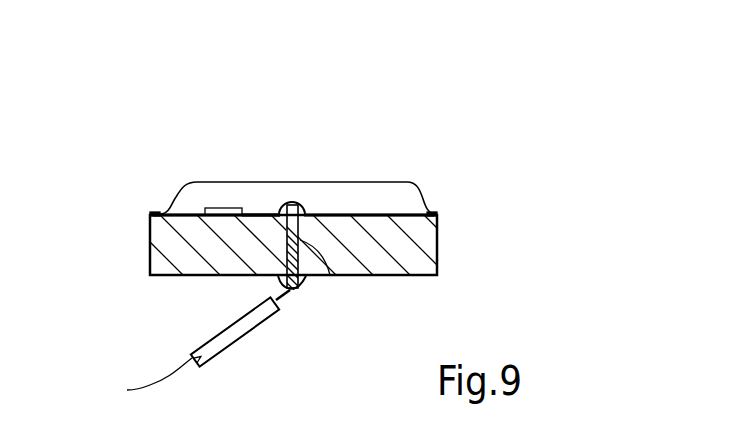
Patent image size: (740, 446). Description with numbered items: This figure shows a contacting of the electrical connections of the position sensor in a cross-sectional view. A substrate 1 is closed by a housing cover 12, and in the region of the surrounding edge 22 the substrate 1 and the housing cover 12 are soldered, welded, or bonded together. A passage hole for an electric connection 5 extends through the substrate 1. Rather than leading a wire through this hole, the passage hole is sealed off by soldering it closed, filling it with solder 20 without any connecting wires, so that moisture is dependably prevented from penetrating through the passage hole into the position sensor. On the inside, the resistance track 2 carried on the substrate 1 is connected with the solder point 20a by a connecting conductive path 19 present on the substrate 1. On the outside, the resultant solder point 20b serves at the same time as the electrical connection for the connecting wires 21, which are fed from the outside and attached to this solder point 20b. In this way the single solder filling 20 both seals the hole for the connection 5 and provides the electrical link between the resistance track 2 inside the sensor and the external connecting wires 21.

The substrate 1 is at (426, 251).
The resistance track 2 is at (218, 212).
The connection 5 is at (330, 275).
The housing cover 12 is at (384, 190).
The connecting conductive path 19 is at (260, 214).
The solder 20 is at (300, 233).
The solder point 20a is at (295, 210).
The solder point 20b is at (303, 284).
The connecting wires 21 is at (188, 353).
The surrounding edge 22 is at (154, 213).